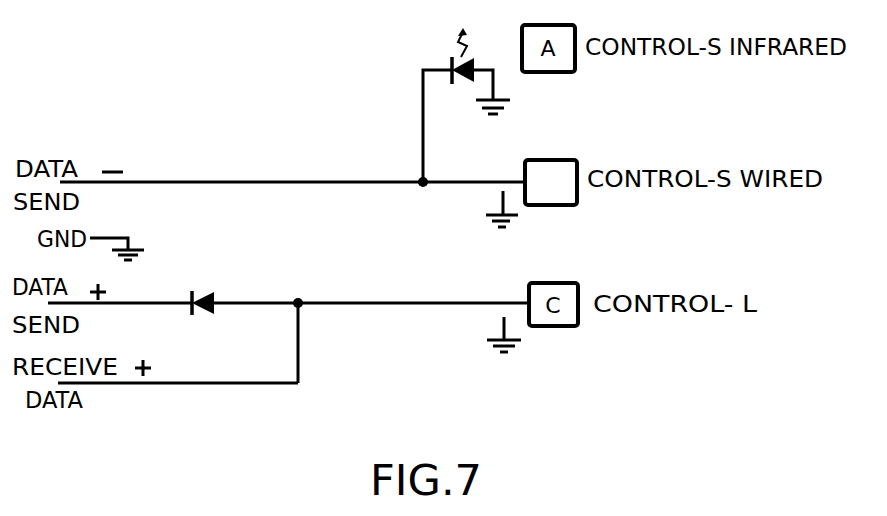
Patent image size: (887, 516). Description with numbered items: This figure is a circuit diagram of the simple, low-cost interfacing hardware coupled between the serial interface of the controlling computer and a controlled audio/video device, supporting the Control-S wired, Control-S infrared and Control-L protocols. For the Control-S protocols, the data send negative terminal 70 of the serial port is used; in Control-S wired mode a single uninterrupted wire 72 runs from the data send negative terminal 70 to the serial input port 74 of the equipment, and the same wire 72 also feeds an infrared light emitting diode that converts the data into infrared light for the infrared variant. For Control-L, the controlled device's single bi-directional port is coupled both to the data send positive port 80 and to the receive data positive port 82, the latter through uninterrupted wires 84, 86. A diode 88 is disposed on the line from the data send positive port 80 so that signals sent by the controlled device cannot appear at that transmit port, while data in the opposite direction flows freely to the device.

The data send negative terminal 70 is at (137, 181).
The wire 72 is at (298, 181).
The serial input port 74 is at (560, 160).
The data send positive port 80 is at (126, 305).
The receive data positive port 82 is at (158, 385).
The wire 84 is at (365, 301).
The wire 86 is at (245, 385).
The diode 88 is at (205, 291).